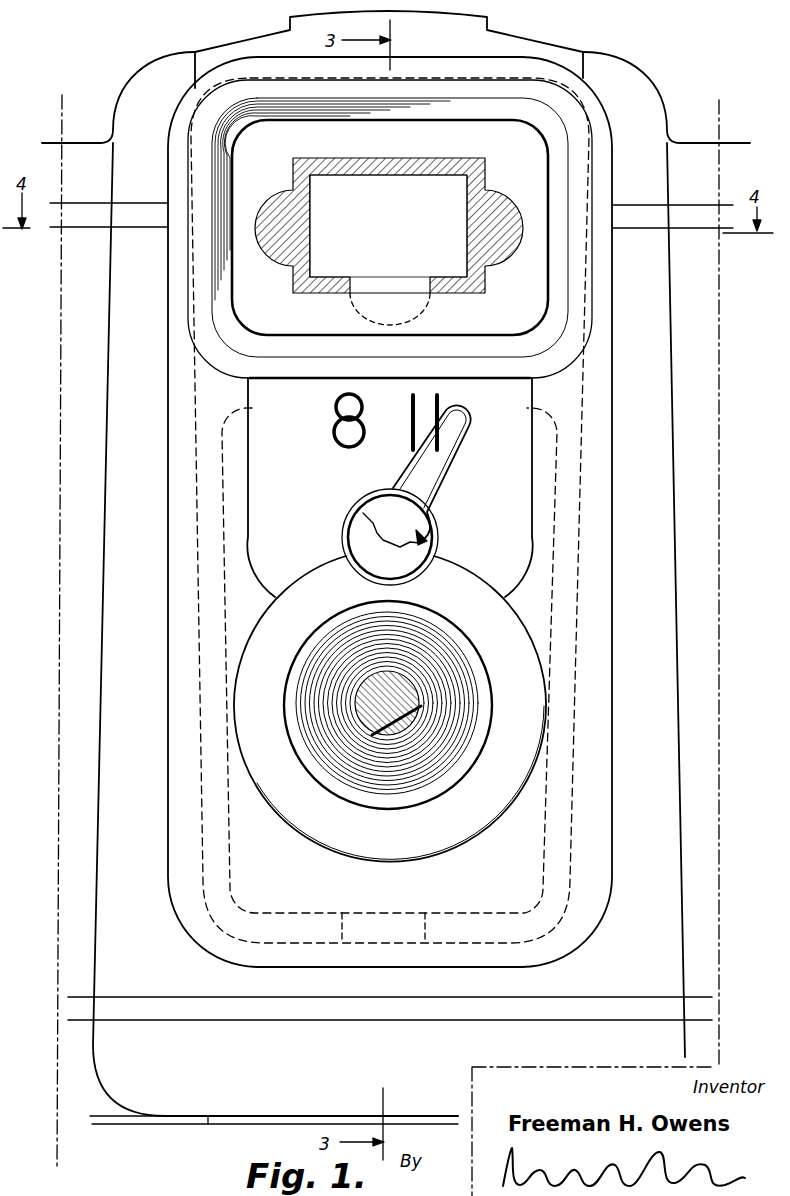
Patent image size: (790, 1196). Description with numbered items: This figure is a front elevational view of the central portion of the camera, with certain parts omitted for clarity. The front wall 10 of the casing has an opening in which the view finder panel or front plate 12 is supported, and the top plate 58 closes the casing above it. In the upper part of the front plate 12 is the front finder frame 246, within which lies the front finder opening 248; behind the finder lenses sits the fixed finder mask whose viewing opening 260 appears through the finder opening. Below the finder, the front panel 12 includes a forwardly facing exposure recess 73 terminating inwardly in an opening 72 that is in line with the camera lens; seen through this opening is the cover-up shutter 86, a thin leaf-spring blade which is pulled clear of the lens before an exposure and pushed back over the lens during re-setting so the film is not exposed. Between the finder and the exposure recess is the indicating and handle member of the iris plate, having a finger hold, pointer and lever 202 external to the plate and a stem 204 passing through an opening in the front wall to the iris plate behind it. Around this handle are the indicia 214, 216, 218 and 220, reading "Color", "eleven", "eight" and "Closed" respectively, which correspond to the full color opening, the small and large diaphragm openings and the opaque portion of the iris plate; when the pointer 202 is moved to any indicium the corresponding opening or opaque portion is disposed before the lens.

The front wall 10 is at (670, 887).
The front plate 12 is at (602, 717).
The top plate 58 is at (612, 77).
The front finder frame 246 is at (570, 127).
The front finder opening 248 is at (533, 198).
The viewing opening 260 is at (405, 236).
The finger hold, pointer and lever 202 is at (413, 521).
The stem 204 is at (383, 553).
The indicia "Color" 214 is at (482, 502).
The indicia "11" 216 is at (412, 433).
The indicia "8" 218 is at (341, 449).
The indicia "Closed" 220 is at (295, 513).
The exposure recess 73 is at (443, 678).
The opening 72 is at (402, 712).
The cover-up shutter 86 is at (402, 727).